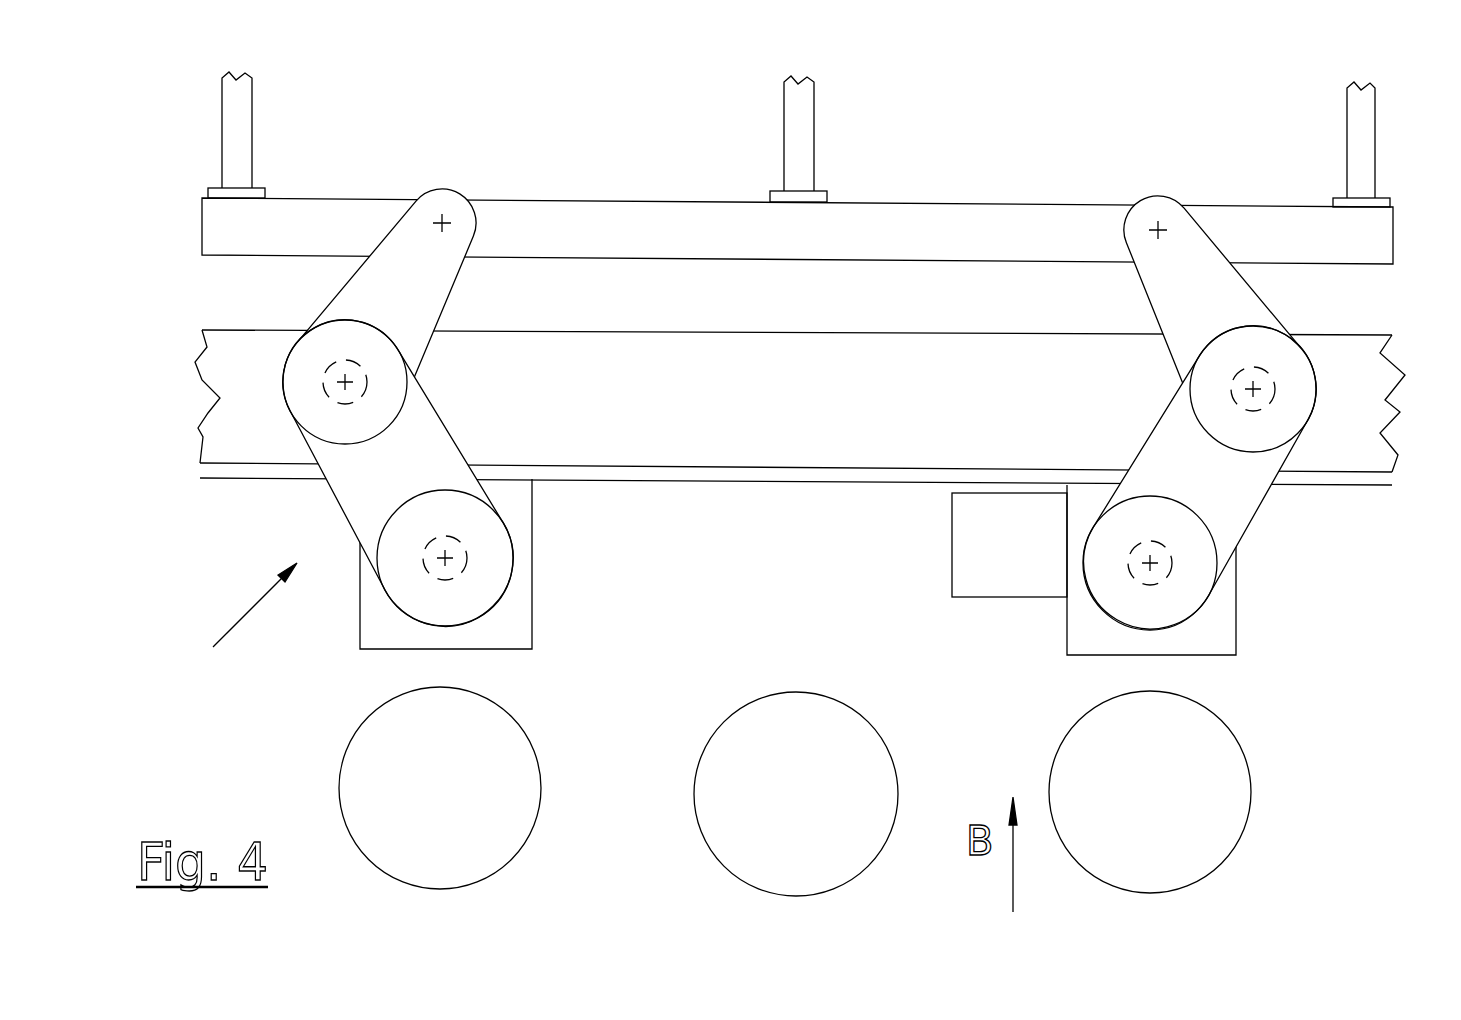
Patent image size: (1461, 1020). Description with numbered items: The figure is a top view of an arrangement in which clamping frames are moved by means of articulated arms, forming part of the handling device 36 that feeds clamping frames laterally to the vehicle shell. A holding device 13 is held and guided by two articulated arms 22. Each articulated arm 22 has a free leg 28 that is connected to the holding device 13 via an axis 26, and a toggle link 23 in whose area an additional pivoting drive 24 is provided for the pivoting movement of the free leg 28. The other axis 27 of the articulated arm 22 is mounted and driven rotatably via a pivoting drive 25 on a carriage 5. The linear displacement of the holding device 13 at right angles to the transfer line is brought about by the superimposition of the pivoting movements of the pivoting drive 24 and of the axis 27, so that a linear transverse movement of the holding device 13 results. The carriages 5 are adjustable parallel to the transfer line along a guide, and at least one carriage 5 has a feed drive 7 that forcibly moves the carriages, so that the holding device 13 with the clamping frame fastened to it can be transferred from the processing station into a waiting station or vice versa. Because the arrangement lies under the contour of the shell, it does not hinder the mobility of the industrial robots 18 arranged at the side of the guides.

The carriage 5 is at (513, 608).
The feed drive 7 is at (1000, 541).
The holding device 13 is at (737, 226).
The industrial robots 18 is at (465, 817).
The articulated arm 22 is at (800, 407).
The toggle link 23 is at (348, 385).
The pivoting drive 24 is at (322, 378).
The pivoting drive 25 is at (468, 555).
The axis 26 is at (447, 222).
The axis 27 is at (447, 565).
The free leg 28 is at (407, 283).
The handling device 36 is at (243, 619).